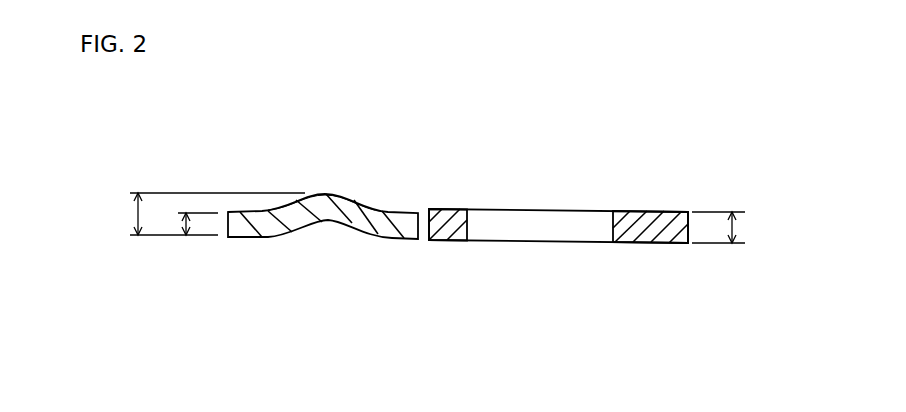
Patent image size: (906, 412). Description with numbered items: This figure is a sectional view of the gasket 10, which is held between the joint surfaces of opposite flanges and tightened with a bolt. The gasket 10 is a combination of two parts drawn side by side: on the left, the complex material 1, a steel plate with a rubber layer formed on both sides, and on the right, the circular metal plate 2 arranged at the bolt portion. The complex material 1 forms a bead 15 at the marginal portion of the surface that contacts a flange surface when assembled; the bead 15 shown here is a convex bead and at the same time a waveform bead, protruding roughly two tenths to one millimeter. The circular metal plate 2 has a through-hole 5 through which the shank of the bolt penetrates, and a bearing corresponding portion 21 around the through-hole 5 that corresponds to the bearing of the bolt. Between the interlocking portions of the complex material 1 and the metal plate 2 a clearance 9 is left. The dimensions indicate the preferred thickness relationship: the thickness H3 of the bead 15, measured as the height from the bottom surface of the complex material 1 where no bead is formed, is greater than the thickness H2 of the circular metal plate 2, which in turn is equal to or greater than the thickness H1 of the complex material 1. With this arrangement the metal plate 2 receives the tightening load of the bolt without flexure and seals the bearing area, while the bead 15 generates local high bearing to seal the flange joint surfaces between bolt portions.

The gasket 10 is at (735, 58).
The complex material 1 is at (407, 209).
The bead 15 is at (330, 196).
The bearing corresponding portion 21 is at (457, 209).
The through-hole 5 is at (551, 209).
The circular metal plate 2 is at (653, 211).
The clearance 9 is at (425, 248).
The thickness of the complex material H1 is at (182, 223).
The thickness of the circular metal plate H2 is at (736, 229).
The thickness of the bead H3 is at (196, 214).